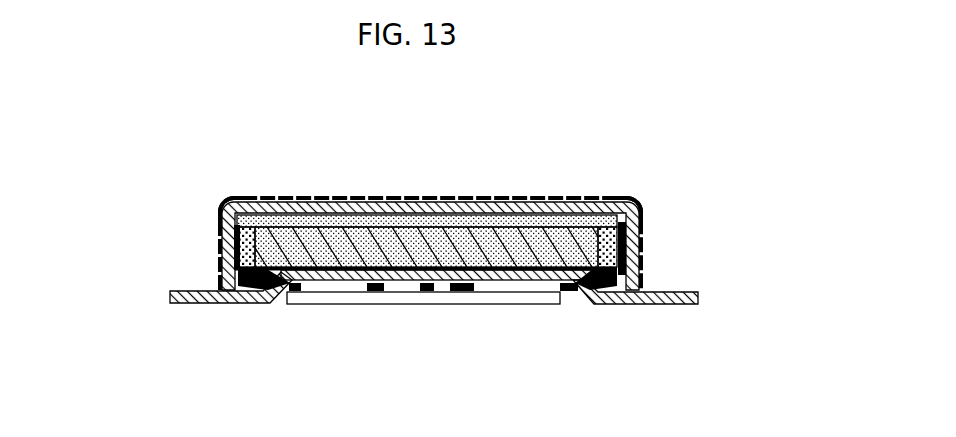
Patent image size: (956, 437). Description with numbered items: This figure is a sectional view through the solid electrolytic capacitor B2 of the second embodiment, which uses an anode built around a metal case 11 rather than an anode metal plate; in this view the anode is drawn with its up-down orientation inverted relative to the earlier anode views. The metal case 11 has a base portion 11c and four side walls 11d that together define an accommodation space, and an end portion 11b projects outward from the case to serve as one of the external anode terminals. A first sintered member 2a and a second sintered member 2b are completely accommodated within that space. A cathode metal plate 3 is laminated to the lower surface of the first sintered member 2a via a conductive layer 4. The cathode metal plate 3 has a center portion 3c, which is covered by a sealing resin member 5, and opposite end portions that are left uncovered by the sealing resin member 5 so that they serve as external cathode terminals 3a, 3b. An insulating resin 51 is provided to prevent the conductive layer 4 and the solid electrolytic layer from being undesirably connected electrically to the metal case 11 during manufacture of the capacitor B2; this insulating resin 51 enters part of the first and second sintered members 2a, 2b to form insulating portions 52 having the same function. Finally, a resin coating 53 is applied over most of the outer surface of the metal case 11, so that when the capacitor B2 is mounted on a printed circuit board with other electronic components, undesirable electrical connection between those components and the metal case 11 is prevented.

The solid electrolytic capacitor B2 is at (106, 175).
The metal case 11 is at (507, 200).
The end portion 11b is at (528, 301).
The base portion 11c is at (408, 200).
The side walls 11d is at (220, 263).
The first sintered member 2a is at (267, 303).
The second sintered member 2b is at (312, 199).
The cathode metal plate 3 is at (393, 292).
The external cathode terminal 3a is at (190, 303).
The external cathode terminal 3b is at (665, 304).
The center portion 3c is at (447, 295).
The conductive layer 4 is at (477, 290).
The sealing resin member 5 is at (325, 292).
The insulating resin 51 is at (238, 290).
The insulating portions 52 is at (253, 197).
The resin coating 53 is at (572, 201).